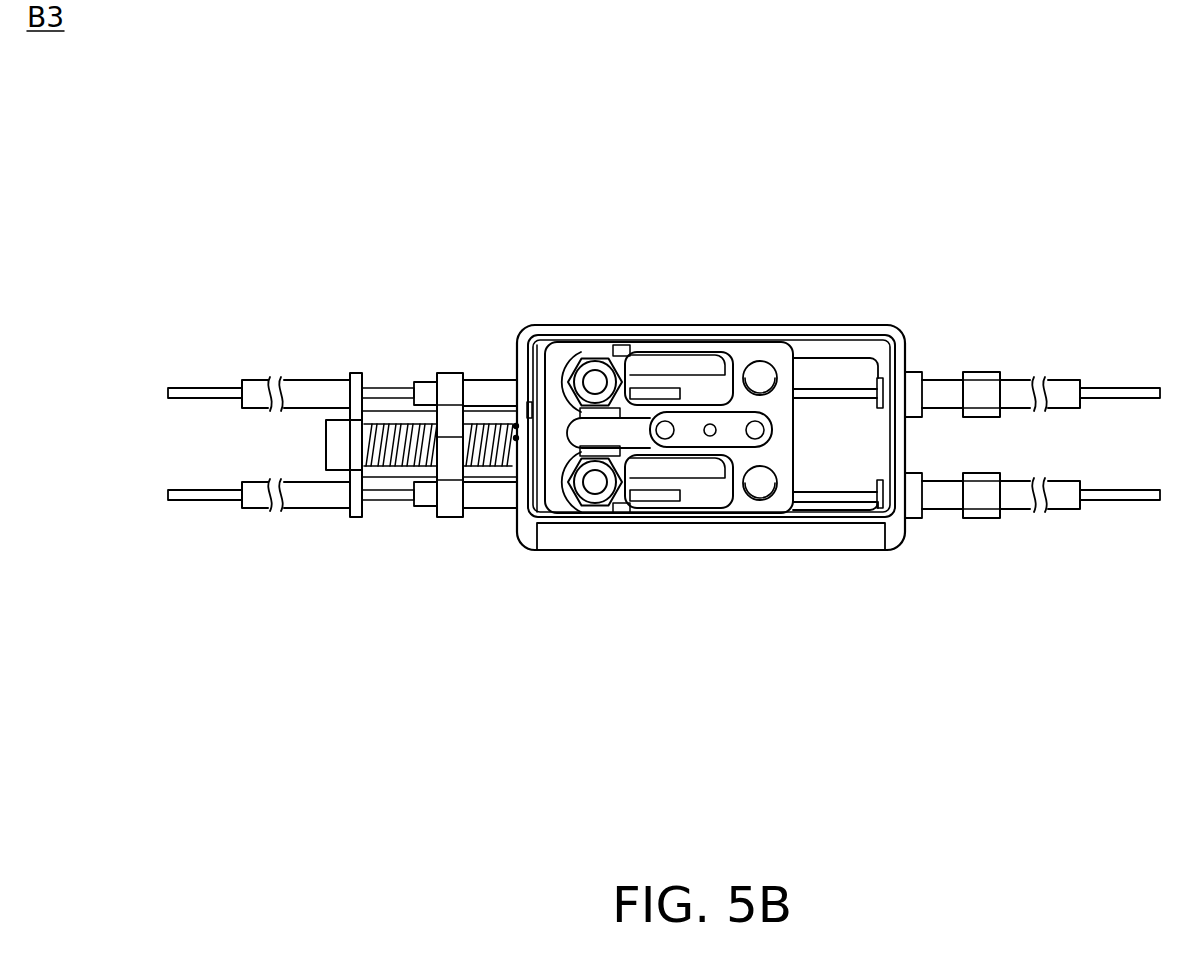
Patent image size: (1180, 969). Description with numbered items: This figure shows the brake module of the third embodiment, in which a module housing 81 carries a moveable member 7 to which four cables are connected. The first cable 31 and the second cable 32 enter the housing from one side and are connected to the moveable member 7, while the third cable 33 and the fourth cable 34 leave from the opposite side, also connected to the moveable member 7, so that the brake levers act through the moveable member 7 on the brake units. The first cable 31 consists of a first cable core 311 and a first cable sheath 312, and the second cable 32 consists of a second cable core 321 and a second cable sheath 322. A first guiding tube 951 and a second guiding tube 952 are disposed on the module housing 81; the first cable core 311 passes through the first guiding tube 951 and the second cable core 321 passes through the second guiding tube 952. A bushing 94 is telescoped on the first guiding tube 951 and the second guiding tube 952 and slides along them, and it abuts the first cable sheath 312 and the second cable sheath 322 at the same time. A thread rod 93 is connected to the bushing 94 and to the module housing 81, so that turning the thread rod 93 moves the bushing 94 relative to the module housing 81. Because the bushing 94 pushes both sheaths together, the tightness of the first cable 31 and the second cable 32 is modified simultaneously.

The first cable 31 is at (247, 520).
The second cable 32 is at (247, 368).
The third cable 33 is at (1075, 521).
The fourth cable 34 is at (1075, 367).
The first cable sheath 312 is at (305, 500).
The second cable sheath 322 is at (305, 388).
The first cable core 311 is at (662, 497).
The second cable core 321 is at (662, 397).
The moveable member 7 is at (735, 352).
The module housing 81 is at (735, 535).
The thread rod 93 is at (340, 445).
The bushing 94 is at (358, 382).
The first guiding tube 951 is at (487, 500).
The second guiding tube 952 is at (487, 388).